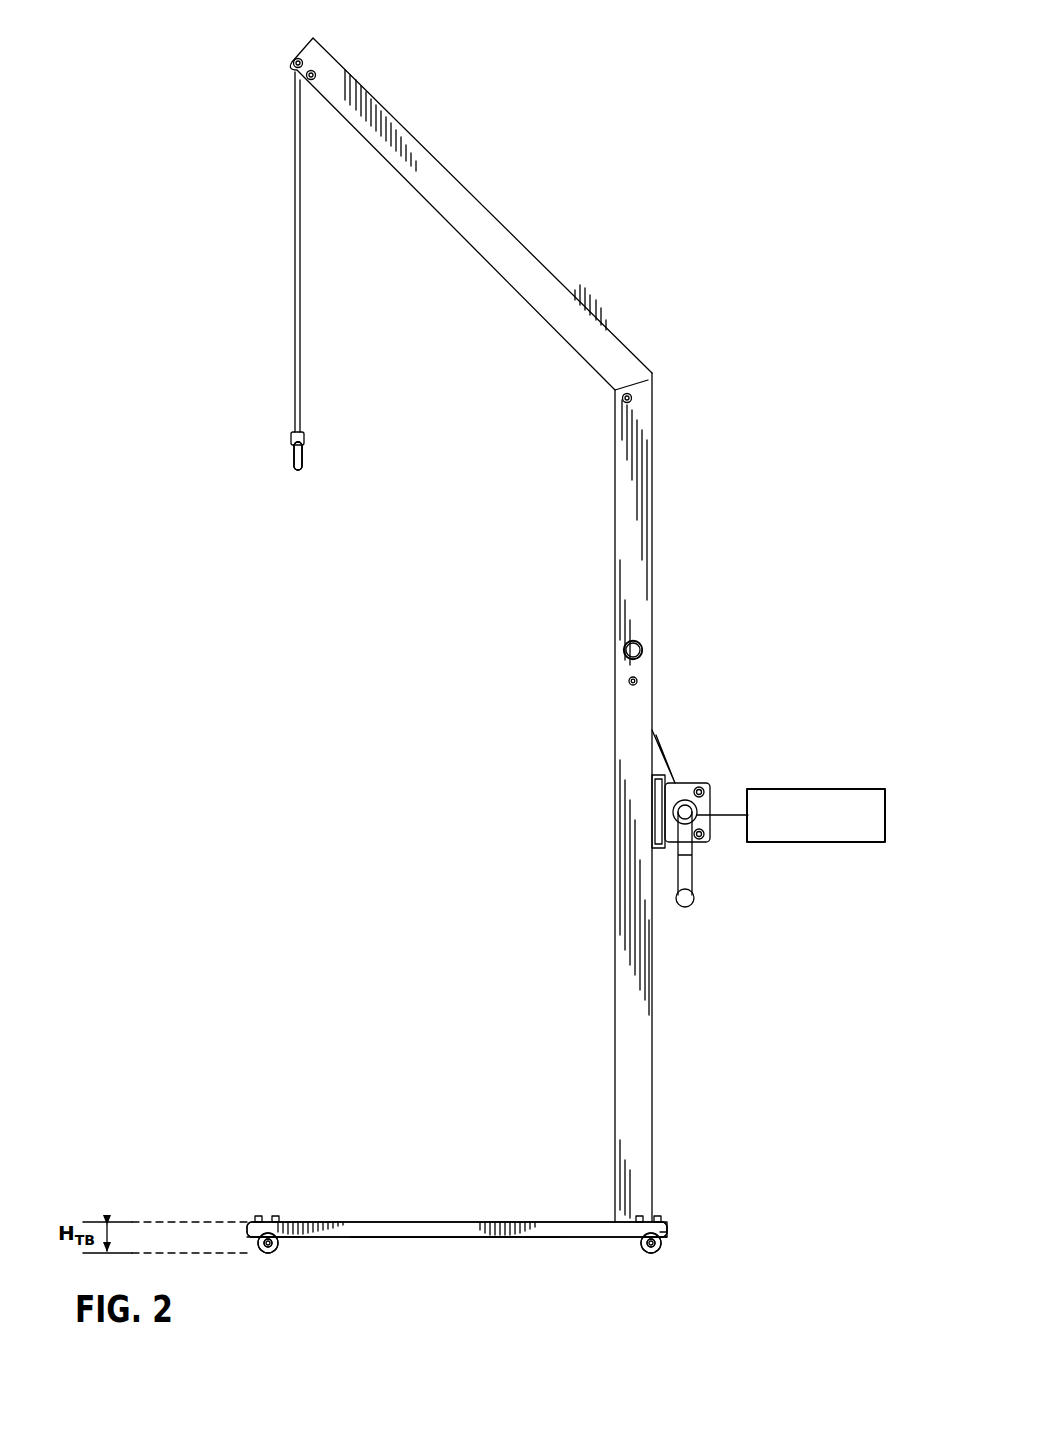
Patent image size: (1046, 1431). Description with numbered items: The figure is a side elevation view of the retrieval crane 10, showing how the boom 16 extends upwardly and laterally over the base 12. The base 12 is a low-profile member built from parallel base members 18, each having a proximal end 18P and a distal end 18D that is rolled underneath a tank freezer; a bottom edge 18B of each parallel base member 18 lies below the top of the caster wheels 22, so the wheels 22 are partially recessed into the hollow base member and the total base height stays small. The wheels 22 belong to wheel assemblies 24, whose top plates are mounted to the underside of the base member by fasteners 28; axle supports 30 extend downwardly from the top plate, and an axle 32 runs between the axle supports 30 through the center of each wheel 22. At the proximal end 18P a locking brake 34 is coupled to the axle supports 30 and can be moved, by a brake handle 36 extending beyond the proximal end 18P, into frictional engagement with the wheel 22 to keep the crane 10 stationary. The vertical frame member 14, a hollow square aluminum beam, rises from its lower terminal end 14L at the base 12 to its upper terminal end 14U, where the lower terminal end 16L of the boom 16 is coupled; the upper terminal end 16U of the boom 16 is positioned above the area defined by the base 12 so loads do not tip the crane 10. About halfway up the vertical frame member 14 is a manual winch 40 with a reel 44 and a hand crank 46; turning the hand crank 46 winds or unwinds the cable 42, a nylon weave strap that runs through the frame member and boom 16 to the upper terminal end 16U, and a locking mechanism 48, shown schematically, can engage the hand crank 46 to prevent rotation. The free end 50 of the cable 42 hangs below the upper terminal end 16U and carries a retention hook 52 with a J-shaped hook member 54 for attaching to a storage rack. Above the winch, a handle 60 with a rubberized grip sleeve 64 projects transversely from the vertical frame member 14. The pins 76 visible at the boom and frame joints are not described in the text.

The retrieval crane 10 is at (650, 192).
The base 12 is at (376, 1205).
The vertical frame member 14 is at (655, 567).
The upper terminal end of vertical frame member 14U is at (652, 405).
The lower terminal end of vertical frame member 14L is at (618, 1198).
The boom 16 is at (548, 270).
The upper terminal end of boom 16U is at (313, 38).
The lower terminal end of boom 16L is at (652, 373).
The parallel base member 18 is at (511, 1239).
The bottom edge of parallel base member 18B is at (448, 1239).
The distal end of parallel base member 18D is at (247, 1230).
The proximal end of parallel base member 18P is at (668, 1228).
The caster wheel 22 is at (268, 1254).
The wheel assembly 24 is at (280, 1254).
The fastener 28 is at (275, 1216).
The axle support 30 is at (280, 1239).
The axle 32 is at (263, 1250).
The locking brake 34 is at (670, 1239).
The brake handle 36 is at (668, 1232).
The manual winch 40 is at (702, 781).
The cable 42 is at (293, 237).
The reel 44 is at (697, 806).
The hand crank 46 is at (693, 885).
The locking mechanism 48 is at (811, 789).
The free end of cable 50 is at (293, 423).
The retention hook 52 is at (303, 467).
The J-shaped hook member 54 is at (303, 455).
The handle 60 is at (643, 642).
The rubberized grip sleeve 64 is at (643, 650).
The pin 76 is at (316, 75).